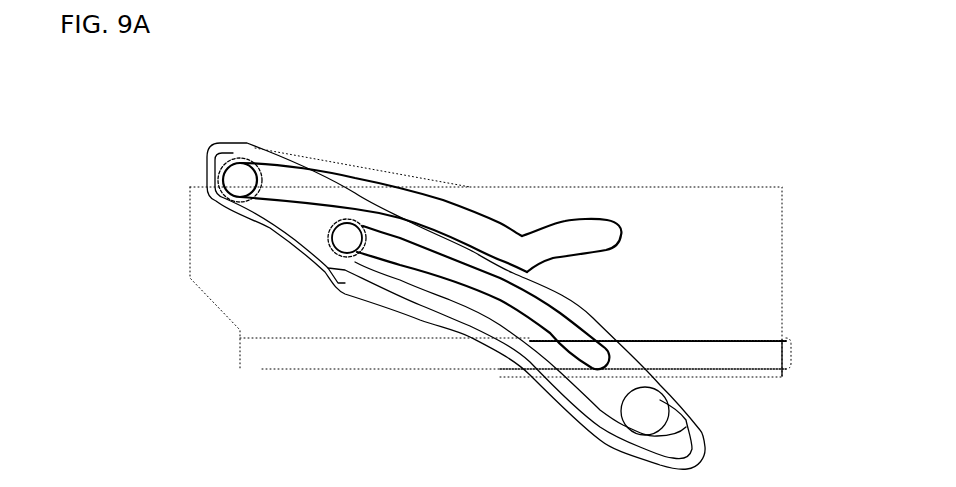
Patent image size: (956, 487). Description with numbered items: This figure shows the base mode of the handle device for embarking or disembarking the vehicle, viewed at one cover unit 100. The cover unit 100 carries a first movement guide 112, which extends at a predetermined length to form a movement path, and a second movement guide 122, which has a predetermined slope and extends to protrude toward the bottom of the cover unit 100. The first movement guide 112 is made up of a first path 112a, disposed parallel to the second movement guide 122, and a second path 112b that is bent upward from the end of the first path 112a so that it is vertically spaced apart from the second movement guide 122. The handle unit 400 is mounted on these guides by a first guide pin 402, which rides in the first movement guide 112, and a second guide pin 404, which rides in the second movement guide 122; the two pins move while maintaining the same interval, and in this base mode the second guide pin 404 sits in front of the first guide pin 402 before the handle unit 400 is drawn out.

The cover unit 100 is at (710, 203).
The first movement guide 112 is at (430, 179).
The first path 112a is at (462, 221).
The second path 112b is at (589, 232).
The second movement guide 122 is at (455, 270).
The handle unit 400 is at (687, 427).
The first guide pin 402 is at (242, 178).
The second guide pin 404 is at (345, 240).